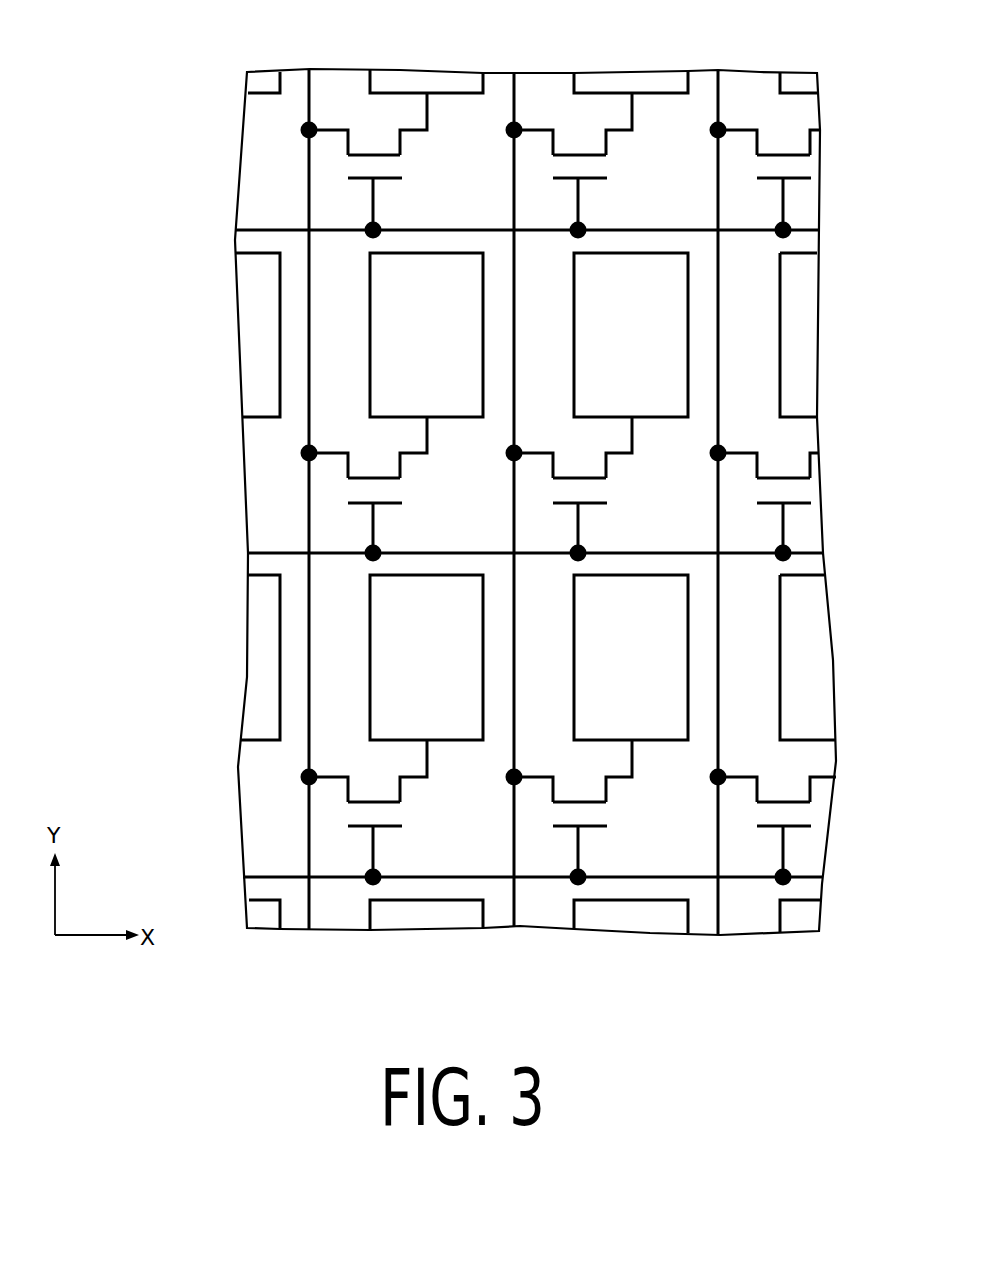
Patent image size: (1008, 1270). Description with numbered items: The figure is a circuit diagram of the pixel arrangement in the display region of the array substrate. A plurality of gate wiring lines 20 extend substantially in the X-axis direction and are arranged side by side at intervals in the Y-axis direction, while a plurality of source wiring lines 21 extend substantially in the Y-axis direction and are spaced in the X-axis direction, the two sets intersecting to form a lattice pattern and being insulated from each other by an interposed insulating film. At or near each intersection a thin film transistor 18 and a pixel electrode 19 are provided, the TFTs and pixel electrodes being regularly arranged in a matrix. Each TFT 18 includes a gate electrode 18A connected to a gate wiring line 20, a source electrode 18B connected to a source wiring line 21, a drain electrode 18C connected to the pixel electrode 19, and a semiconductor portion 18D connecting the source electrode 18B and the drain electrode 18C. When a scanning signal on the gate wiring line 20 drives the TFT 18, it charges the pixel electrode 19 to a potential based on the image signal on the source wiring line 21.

The thin film transistor 18 is at (138, 342).
The gate electrode 18A is at (363, 507).
The source electrode 18B is at (347, 469).
The drain electrode 18C is at (410, 467).
The semiconductor portion 18D is at (373, 477).
The pixel electrode 19 is at (370, 327).
The gate wiring line 20 is at (265, 228).
The source wiring line 21 is at (312, 87).